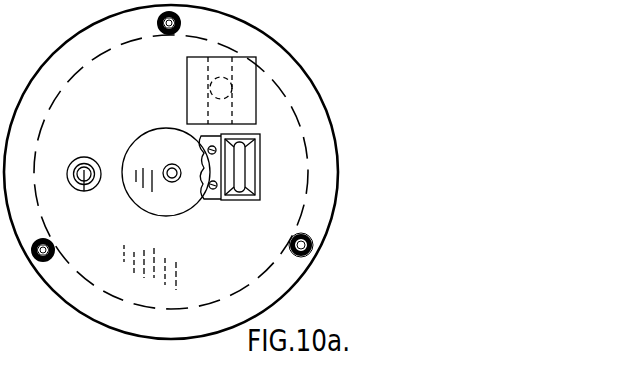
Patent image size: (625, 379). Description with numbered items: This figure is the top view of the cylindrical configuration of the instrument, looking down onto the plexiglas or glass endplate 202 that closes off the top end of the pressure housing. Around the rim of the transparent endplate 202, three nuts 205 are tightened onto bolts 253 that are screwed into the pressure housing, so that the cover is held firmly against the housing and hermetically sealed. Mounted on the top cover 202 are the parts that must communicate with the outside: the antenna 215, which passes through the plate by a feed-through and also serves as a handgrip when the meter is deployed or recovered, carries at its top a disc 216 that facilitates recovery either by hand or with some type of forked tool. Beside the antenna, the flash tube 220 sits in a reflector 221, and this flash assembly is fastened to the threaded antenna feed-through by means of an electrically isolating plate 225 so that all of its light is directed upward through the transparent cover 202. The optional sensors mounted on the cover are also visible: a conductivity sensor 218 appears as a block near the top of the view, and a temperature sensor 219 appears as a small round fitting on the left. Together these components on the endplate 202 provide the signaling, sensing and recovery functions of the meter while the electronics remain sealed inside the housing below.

The endplate 202 is at (77, 260).
The nuts 205 is at (305, 256).
The antenna 215 is at (170, 168).
The disc 216 is at (146, 155).
The conductivity sensor 218 is at (246, 58).
The temperature sensor 219 is at (84, 191).
The flash tube 220 is at (242, 161).
The reflector 221 is at (249, 181).
The electrically isolating plate 225 is at (208, 198).
The bolts 253 is at (309, 249).